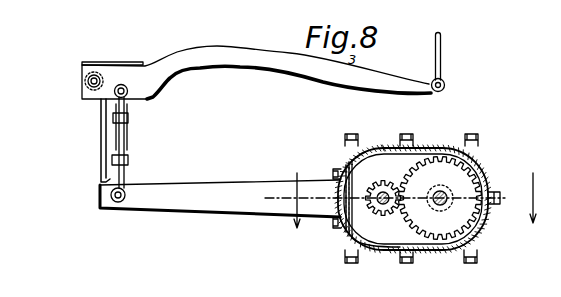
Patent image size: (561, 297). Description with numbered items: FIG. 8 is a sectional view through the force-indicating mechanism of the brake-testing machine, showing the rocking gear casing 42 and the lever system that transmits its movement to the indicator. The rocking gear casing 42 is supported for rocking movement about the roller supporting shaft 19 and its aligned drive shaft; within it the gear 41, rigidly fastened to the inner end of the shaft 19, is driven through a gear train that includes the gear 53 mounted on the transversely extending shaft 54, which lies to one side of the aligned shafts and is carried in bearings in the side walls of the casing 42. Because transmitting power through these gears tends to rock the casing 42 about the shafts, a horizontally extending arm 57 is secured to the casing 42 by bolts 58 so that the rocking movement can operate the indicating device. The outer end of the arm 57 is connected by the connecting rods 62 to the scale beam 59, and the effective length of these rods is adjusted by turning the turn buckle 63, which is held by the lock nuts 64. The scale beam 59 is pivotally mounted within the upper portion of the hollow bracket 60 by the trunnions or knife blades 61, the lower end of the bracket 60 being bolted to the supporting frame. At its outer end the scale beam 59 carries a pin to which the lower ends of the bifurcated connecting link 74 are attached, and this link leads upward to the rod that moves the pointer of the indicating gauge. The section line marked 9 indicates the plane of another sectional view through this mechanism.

The scale beam 59 is at (242, 49).
The bifurcated connecting link 74 is at (441, 56).
The trunnions or knife blades 61 is at (86, 81).
The connecting rods 62 is at (133, 99).
The hollow bracket 60 is at (100, 126).
The turn buckle 63 is at (127, 142).
The lock nuts 64 is at (128, 162).
The horizontally extending arm 57 is at (202, 216).
The bolts 58 is at (333, 222).
The rocking gear casing 42 is at (480, 146).
The gear 41 is at (487, 227).
The roller supporting shaft 19 is at (448, 192).
The transversely extending shaft 54 is at (382, 188).
The gear 53 is at (388, 232).
The section line 9- 9 is at (414, 200).